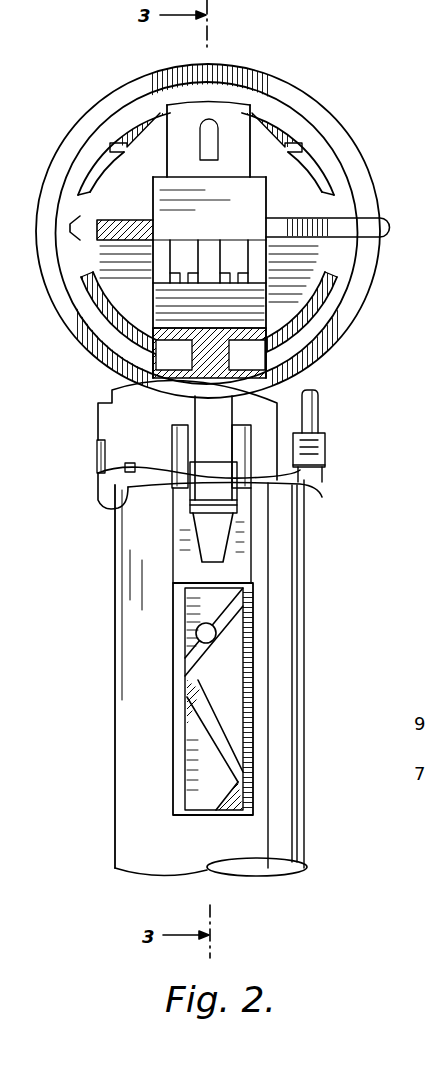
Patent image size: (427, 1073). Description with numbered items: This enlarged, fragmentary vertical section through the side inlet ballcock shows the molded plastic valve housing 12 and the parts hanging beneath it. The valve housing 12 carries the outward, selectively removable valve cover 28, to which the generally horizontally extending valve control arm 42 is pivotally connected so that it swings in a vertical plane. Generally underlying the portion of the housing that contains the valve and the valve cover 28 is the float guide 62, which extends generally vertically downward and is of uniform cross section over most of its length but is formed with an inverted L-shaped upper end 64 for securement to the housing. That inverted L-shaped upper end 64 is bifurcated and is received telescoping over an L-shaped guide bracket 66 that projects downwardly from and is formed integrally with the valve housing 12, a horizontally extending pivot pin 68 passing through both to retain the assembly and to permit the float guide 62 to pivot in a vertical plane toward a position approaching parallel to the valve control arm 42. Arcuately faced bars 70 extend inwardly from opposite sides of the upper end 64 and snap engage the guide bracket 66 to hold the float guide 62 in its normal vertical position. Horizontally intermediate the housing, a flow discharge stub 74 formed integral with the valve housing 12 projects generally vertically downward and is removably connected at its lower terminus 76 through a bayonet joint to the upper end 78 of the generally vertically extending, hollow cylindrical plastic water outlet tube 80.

The valve housing 12 is at (283, 76).
The valve cover 28 is at (323, 263).
The valve control arm 42 is at (272, 313).
The float guide 62 is at (173, 663).
The inverted L-shaped upper end 64 is at (238, 518).
The guide bracket 66 is at (221, 438).
The pivot pin 68 is at (237, 492).
The bars 70 is at (185, 455).
The flow discharge stub 74 is at (112, 393).
The lower terminus 76 is at (93, 482).
The upper end 78 is at (120, 513).
The water outlet tube 80 is at (174, 678).